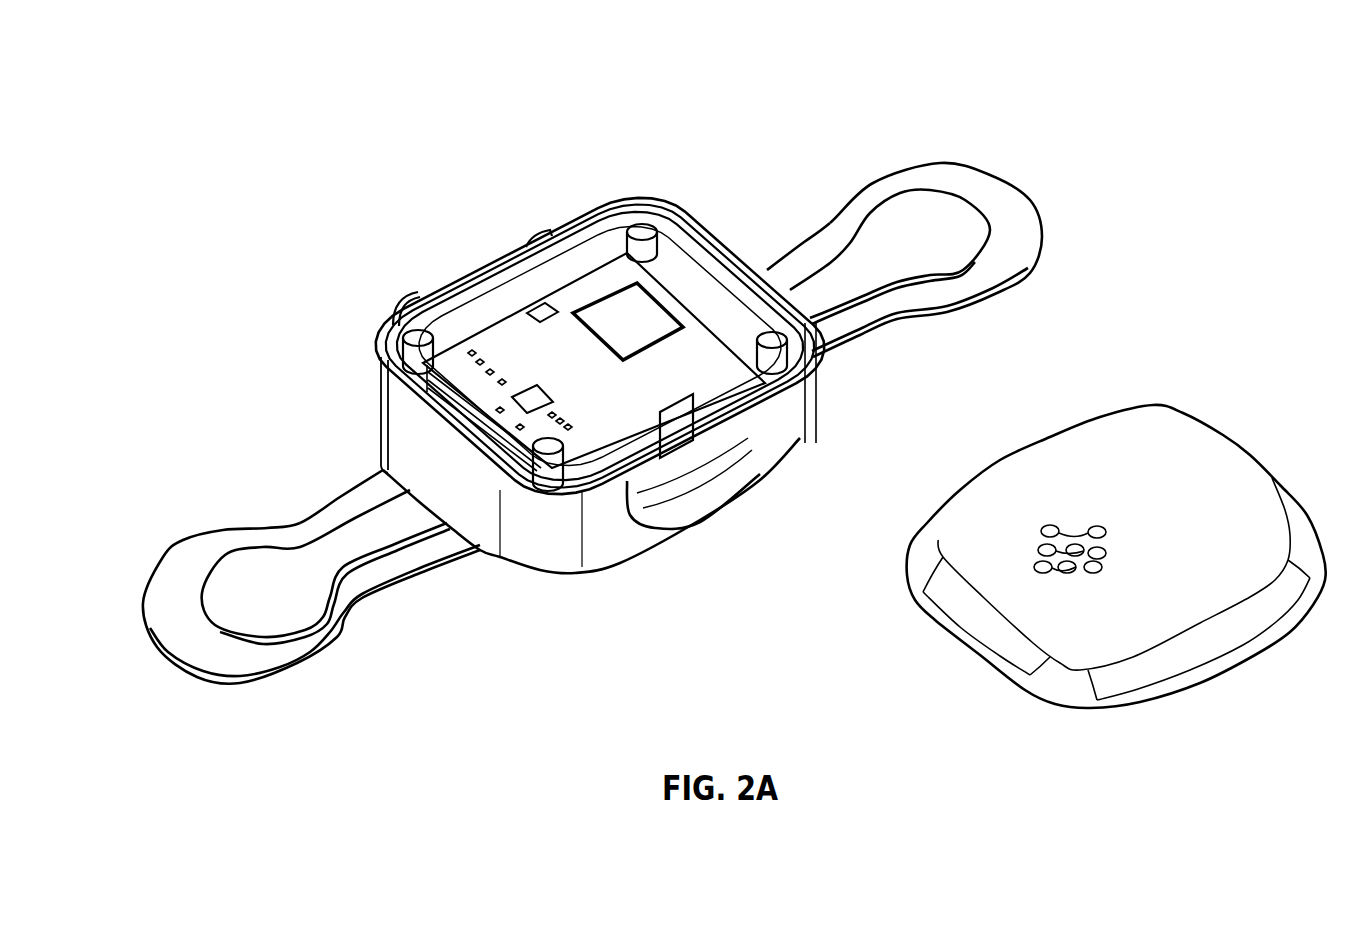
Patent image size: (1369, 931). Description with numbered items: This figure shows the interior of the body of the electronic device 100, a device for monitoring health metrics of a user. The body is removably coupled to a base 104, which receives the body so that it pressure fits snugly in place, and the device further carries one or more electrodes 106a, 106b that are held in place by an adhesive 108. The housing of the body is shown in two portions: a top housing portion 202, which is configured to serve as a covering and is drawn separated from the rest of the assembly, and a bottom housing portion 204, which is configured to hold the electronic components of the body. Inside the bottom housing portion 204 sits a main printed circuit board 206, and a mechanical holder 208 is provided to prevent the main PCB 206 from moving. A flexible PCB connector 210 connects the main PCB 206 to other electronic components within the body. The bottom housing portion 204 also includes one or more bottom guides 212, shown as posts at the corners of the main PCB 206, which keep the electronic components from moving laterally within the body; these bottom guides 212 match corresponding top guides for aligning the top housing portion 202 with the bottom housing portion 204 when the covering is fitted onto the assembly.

The electronic device 100 is at (322, 106).
The base 104 is at (805, 447).
The electrode 106a is at (905, 192).
The electrode 106b is at (262, 550).
The adhesive 108 is at (982, 172).
The top housing portion 202 is at (1240, 448).
The bottom housing portion 204 is at (548, 228).
The main printed circuit board 206 is at (487, 340).
The mechanical holder 208 is at (376, 357).
The flexible PCB connector 210 is at (678, 432).
The bottom guide 212 is at (641, 212).